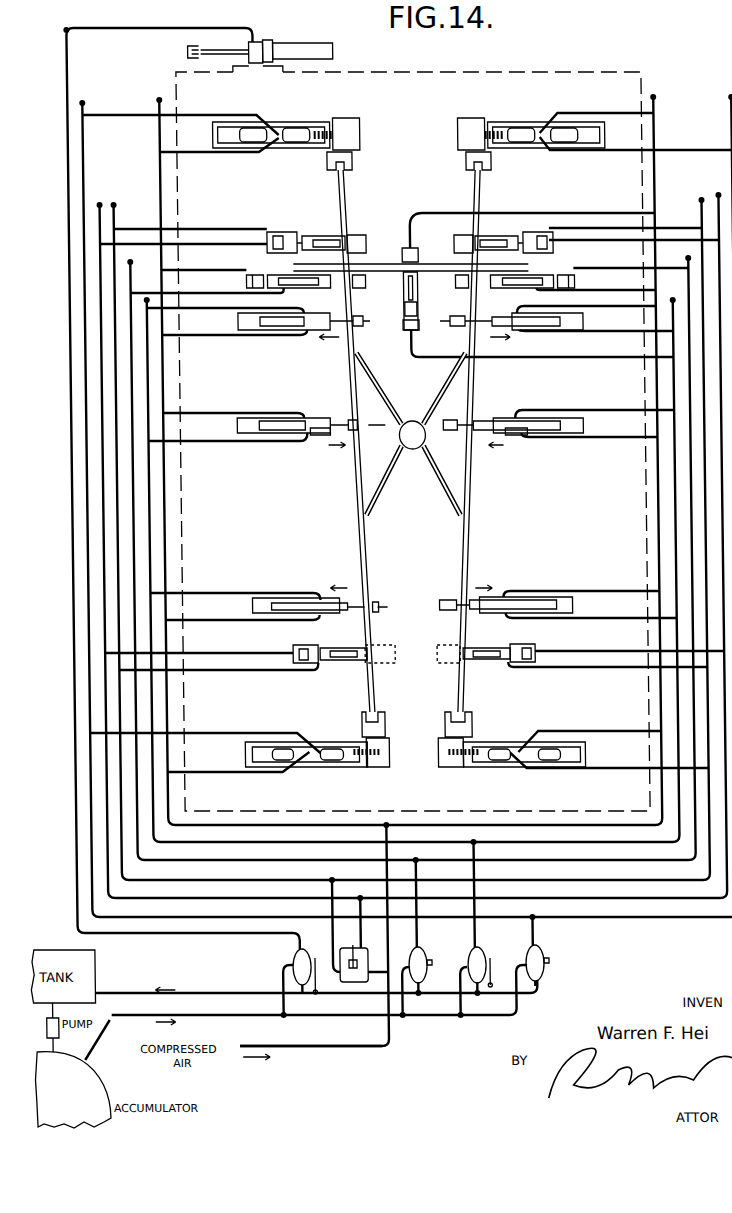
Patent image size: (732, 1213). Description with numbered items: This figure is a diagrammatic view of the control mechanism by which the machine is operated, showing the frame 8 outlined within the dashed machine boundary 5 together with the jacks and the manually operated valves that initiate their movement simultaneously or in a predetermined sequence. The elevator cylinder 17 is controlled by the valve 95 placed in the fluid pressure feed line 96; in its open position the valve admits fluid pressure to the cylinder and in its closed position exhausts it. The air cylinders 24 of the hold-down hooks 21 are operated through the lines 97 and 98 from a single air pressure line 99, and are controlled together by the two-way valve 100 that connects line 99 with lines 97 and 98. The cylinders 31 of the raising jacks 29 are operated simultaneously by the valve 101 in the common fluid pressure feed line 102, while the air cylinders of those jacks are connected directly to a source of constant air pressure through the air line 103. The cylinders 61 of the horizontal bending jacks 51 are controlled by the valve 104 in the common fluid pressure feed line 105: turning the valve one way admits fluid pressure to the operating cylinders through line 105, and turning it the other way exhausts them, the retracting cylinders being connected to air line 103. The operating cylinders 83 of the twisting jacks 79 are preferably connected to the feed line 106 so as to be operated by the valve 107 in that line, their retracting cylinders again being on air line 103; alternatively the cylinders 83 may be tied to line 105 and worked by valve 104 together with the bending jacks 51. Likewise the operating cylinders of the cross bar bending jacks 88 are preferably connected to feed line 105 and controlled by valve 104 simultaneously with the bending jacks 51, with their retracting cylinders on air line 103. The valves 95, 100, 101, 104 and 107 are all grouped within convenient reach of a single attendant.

The machine frame (dashed outline) 5 is at (606, 68).
The frame 8 is at (352, 488).
The elevator cylinder 17 is at (260, 43).
The hold-down hooks 21 is at (310, 236).
The air cylinders 24 is at (282, 233).
The raising jacks 29 is at (296, 280).
The cylinders 31 is at (282, 280).
The horizontal bending jacks 51 is at (308, 314).
The cylinders 61 is at (312, 436).
The twisting jacks 79 is at (338, 125).
The operating cylinders 83 is at (296, 128).
The cross bar bending jacks 88 is at (416, 292).
The valve 95 is at (281, 953).
The fluid pressure feed line 96 is at (66, 68).
The line 97 is at (97, 203).
The line 98 is at (113, 205).
The air pressure line 99 is at (364, 965).
The two-way valve 100 is at (340, 946).
The valve 101 is at (418, 960).
The common fluid pressure feed line 102 is at (129, 283).
The air line 103 is at (160, 523).
The valve 104 is at (477, 960).
The common fluid pressure feed line 105 is at (145, 370).
The feed line 106 is at (82, 152).
The valve 107 is at (534, 975).